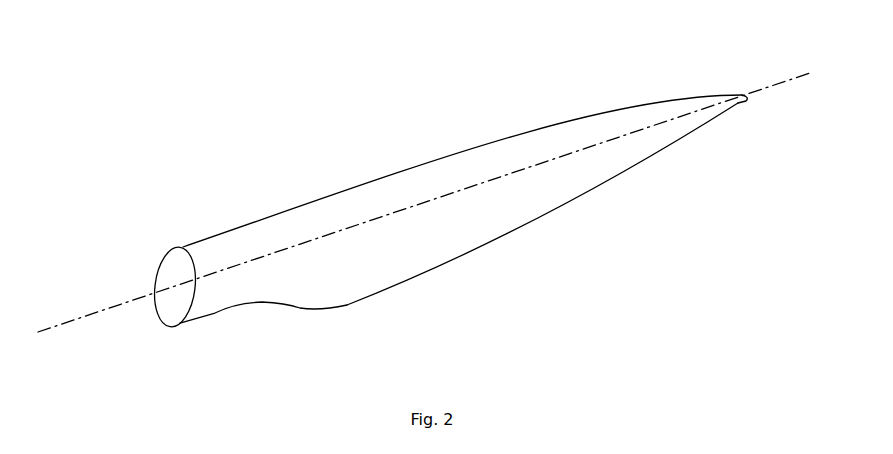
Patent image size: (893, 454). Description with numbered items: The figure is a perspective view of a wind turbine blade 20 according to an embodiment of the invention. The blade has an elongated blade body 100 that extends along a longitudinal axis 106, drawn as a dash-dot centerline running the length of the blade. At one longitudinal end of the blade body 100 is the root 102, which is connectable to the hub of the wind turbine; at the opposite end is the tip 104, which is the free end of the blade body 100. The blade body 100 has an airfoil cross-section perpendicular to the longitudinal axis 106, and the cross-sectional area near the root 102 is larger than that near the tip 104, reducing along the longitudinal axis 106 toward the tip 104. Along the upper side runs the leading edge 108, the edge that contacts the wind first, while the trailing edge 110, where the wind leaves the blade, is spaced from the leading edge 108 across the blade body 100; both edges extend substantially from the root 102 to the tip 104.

The wind turbine blade 20 is at (230, 65).
The blade body 100 is at (437, 143).
The root 102 is at (207, 253).
The tip 104 is at (727, 117).
The longitudinal axis 106 is at (780, 83).
The leading edge 108 is at (350, 185).
The trailing edge 110 is at (503, 237).